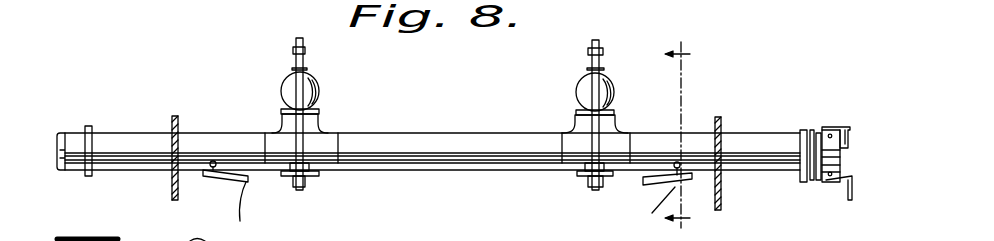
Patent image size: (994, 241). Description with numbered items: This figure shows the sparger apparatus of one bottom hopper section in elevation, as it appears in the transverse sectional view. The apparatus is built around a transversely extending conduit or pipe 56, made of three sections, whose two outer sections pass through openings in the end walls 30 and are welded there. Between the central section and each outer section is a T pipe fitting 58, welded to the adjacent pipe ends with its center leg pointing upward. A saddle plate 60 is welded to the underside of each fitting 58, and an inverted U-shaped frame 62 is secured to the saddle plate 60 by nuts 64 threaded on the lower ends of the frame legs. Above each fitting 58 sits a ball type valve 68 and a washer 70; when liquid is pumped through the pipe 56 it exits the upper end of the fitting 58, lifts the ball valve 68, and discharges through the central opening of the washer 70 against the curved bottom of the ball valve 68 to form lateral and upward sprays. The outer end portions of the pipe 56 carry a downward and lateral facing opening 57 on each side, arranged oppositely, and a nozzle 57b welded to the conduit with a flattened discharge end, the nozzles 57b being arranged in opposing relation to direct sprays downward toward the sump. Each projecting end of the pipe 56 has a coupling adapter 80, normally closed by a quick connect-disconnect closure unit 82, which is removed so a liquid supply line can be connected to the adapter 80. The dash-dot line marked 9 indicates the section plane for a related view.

The section line 9- 9 is at (689, 137).
The end wall 30 is at (170, 192).
The conduit or pipe 56 is at (413, 166).
The downward and lateral facing opening 57 is at (215, 178).
The nozzle 57b is at (453, 211).
The T pipe fitting 58 is at (327, 133).
The saddle plate 60 is at (313, 177).
The inverted U-shaped frame 62 is at (306, 63).
The nut 64 is at (288, 177).
The ball type valve 68 is at (318, 88).
The washer 70 is at (613, 110).
The coupling adapter 80 is at (80, 133).
The quick connect-disconnect closure unit 82 is at (845, 155).